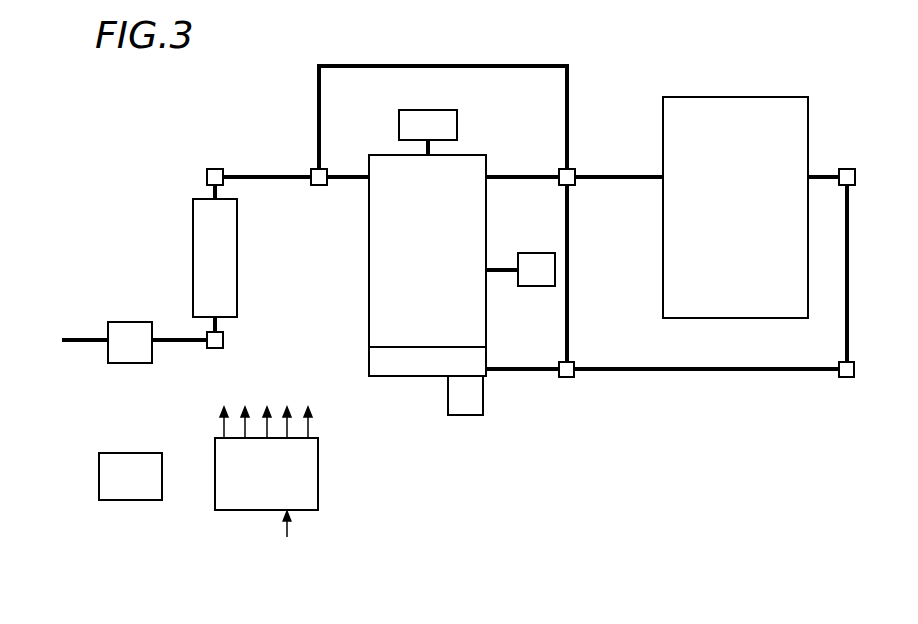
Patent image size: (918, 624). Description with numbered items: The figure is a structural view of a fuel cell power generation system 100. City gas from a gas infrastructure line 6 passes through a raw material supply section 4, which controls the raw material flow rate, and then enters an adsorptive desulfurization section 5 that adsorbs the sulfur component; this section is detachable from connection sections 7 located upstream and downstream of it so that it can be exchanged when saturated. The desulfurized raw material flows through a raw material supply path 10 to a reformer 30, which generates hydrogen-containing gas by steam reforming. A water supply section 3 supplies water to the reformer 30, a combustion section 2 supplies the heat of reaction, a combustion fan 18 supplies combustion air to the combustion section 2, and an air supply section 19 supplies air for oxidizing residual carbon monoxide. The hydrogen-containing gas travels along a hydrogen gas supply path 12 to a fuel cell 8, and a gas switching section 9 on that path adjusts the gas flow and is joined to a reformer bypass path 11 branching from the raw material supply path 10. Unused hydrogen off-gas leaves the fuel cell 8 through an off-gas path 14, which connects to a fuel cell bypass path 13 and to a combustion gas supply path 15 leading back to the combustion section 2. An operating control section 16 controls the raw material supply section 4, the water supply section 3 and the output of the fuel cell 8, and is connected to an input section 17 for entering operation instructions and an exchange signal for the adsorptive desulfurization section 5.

The combustion section 2 is at (392, 368).
The water supply section 3 is at (448, 126).
The raw material supply section 4 is at (125, 333).
The adsorptive desulfurization section 5 is at (218, 231).
The gas infrastructure line 6 is at (88, 343).
The connection section 7 is at (210, 170).
The fuel cell 8 is at (764, 117).
The gas switching section 9 is at (569, 167).
The raw material supply path 10 is at (348, 184).
The reformer bypass path 11 is at (413, 62).
The hydrogen gas supply path 12 is at (639, 181).
The fuel cell bypass path 13 is at (570, 296).
The off-gas path 14 is at (712, 371).
The combustion gas supply path 15 is at (518, 372).
The operating control section 16 is at (253, 500).
The input section 17 is at (136, 486).
The combustion fan 18 is at (467, 405).
The air supply section 19 is at (533, 274).
The reformer 30 is at (478, 176).
The fuel cell power generation system 100 is at (757, 65).